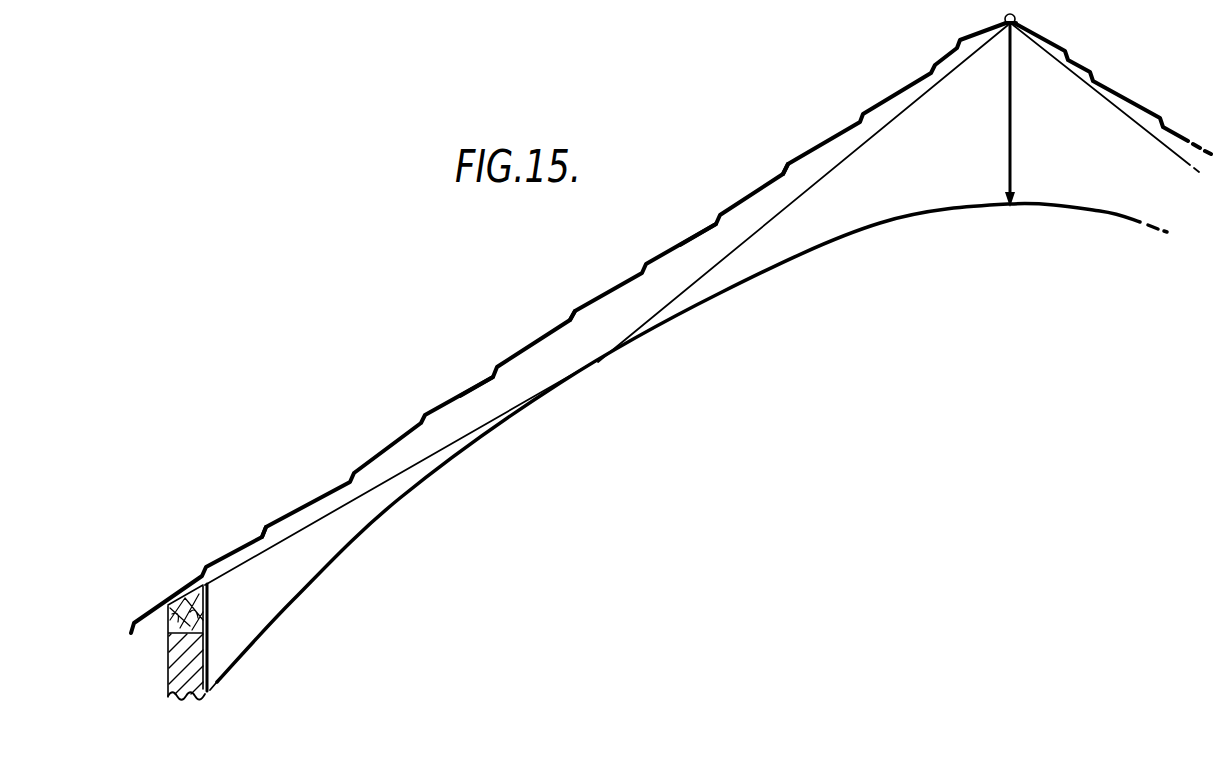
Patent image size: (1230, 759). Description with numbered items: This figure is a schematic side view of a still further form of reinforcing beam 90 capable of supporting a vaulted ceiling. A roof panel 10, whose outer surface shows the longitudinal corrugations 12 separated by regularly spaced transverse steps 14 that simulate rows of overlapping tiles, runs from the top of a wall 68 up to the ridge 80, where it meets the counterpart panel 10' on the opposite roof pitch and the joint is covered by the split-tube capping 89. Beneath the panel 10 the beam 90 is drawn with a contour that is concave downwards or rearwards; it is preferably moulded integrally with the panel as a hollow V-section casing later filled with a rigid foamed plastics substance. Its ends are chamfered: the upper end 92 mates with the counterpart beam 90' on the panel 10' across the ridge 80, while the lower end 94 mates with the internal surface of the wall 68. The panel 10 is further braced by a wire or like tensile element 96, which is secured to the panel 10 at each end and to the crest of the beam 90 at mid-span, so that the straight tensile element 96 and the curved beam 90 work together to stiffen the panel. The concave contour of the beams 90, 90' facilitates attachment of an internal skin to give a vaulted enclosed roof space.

The panel 10 is at (568, 328).
The panel on the opposite side of the ridge 10' is at (1112, 98).
The longitudinal corrugations 12 is at (278, 523).
The transverse steps 14 is at (490, 378).
The wall 68 is at (165, 633).
The ridge 80 is at (1003, 23).
The split-tube capping 89 is at (1016, 17).
The reinforcing beam 90 is at (678, 443).
The counterpart beam 90' is at (1121, 249).
The upper chamfered end of beam 92 is at (1008, 210).
The lower chamfered end of beam 94 is at (213, 681).
The tensile element 96 is at (371, 487).